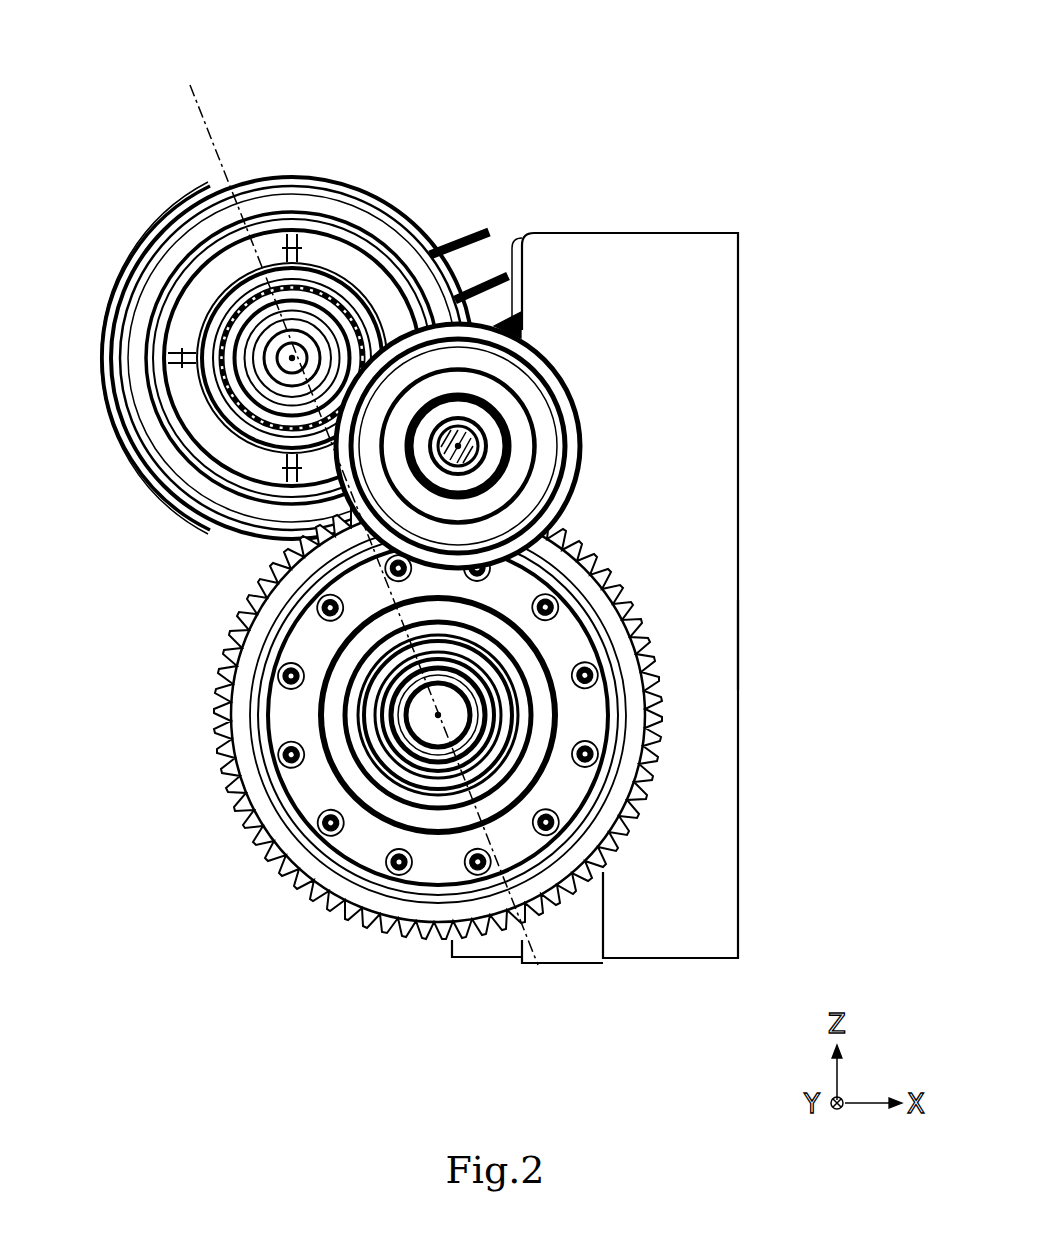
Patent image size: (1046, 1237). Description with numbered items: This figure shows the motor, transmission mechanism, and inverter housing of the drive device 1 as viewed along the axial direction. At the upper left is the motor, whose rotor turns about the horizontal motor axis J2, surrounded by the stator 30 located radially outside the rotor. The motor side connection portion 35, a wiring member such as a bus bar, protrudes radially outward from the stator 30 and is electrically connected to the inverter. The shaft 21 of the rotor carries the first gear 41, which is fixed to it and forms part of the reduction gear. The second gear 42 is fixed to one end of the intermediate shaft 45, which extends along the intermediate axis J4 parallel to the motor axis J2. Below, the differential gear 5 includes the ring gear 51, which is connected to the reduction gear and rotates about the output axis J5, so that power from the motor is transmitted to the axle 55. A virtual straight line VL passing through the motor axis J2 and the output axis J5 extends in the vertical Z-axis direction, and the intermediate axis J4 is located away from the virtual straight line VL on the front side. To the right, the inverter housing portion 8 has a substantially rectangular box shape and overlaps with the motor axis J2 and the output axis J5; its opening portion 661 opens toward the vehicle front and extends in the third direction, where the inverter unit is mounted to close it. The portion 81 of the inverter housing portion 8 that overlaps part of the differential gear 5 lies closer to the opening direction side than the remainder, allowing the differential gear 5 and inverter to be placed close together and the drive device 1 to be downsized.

The drive device 1 is at (768, 177).
The differential gear 5 is at (387, 730).
The inverter housing portion 8 is at (631, 233).
The shaft 21 is at (180, 268).
The stator 30 is at (293, 178).
The motor side connection portion 35 is at (470, 228).
The first gear 41 is at (342, 282).
The second gear 42 is at (580, 463).
The intermediate shaft 45 is at (458, 444).
The ring gear 51 is at (247, 840).
The axle 55 is at (368, 713).
The portion 81 is at (577, 933).
The opening portion 661 is at (746, 644).
The motor axis J2 is at (291, 359).
The intermediate axis J4 is at (457, 447).
The output axis J5 is at (438, 720).
The virtual straight line VL is at (195, 82).